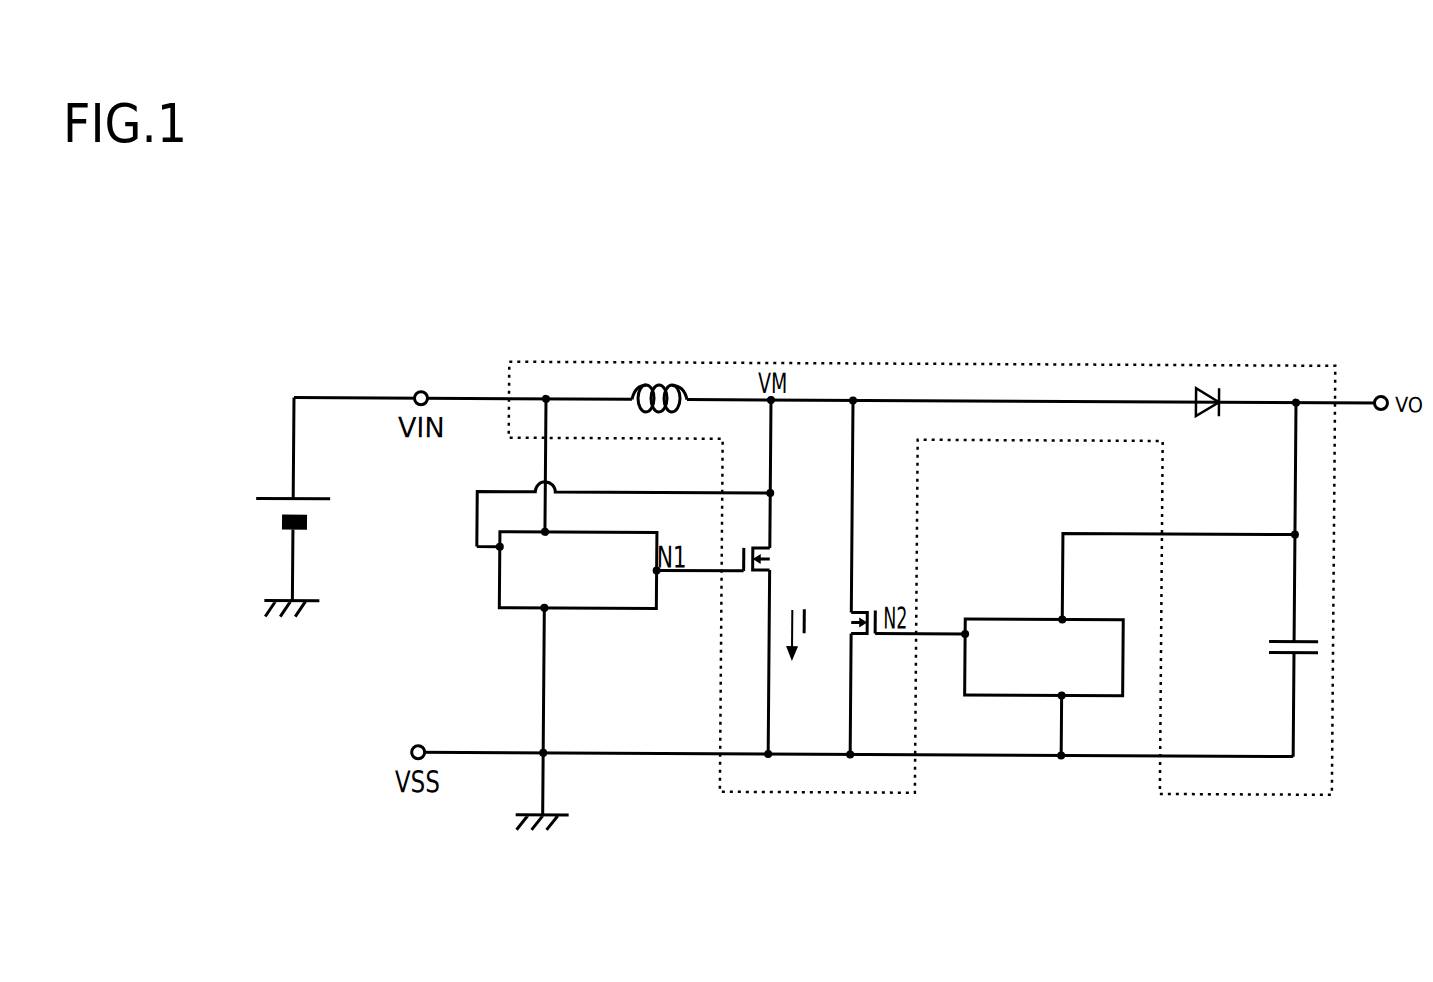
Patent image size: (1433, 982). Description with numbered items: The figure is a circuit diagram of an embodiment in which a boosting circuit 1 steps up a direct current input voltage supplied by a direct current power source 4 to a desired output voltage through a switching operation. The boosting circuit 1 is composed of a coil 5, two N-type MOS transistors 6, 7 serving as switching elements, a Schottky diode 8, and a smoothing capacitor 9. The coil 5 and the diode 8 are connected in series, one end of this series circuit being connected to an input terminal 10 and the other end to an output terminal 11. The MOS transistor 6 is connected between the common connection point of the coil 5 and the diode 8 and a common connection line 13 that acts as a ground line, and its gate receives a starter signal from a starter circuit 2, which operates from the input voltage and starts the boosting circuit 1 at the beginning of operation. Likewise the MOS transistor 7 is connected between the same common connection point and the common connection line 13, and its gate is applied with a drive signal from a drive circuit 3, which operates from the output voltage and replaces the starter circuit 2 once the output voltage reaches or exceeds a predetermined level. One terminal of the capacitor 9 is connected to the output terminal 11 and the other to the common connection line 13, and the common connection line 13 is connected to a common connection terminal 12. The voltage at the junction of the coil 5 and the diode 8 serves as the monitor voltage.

The boosting circuit 1 is at (1233, 362).
The starter circuit 2 is at (603, 612).
The drive circuit 3 is at (996, 617).
The direct current power source 4 is at (279, 501).
The coil 5 is at (653, 383).
The MOS transistor 6 is at (762, 573).
The MOS transistor 7 is at (863, 608).
The diode 8 is at (1209, 420).
The smoothing capacitor 9 is at (1287, 638).
The input terminal 10 is at (421, 391).
The output terminal 11 is at (1382, 392).
The common connection terminal 12 is at (421, 746).
The common connection line 13 is at (650, 758).